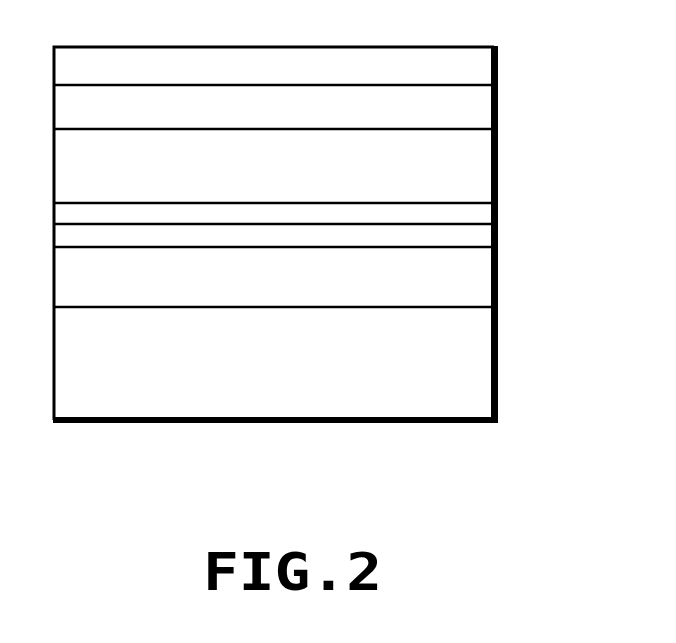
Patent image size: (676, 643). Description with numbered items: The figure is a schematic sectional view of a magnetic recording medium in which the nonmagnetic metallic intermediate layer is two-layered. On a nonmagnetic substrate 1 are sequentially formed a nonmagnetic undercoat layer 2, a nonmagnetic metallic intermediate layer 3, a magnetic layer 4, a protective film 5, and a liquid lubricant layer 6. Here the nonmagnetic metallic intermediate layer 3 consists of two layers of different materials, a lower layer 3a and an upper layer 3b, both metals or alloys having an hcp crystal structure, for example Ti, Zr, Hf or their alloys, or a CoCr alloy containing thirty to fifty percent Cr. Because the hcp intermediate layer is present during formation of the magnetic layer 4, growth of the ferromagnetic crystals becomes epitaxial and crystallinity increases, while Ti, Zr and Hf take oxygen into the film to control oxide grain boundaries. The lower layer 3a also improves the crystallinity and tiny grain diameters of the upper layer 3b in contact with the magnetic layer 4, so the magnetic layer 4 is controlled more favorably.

The nonmagnetic substrate 1 is at (475, 360).
The nonmagnetic undercoat layer 2 is at (475, 292).
The nonmagnetic metallic intermediate layer 3 is at (338, 213).
The lower layer 3a is at (477, 238).
The upper layer 3b is at (477, 213).
The magnetic layer 4 is at (473, 158).
The protective film 5 is at (477, 110).
The liquid lubricant layer 6 is at (477, 67).